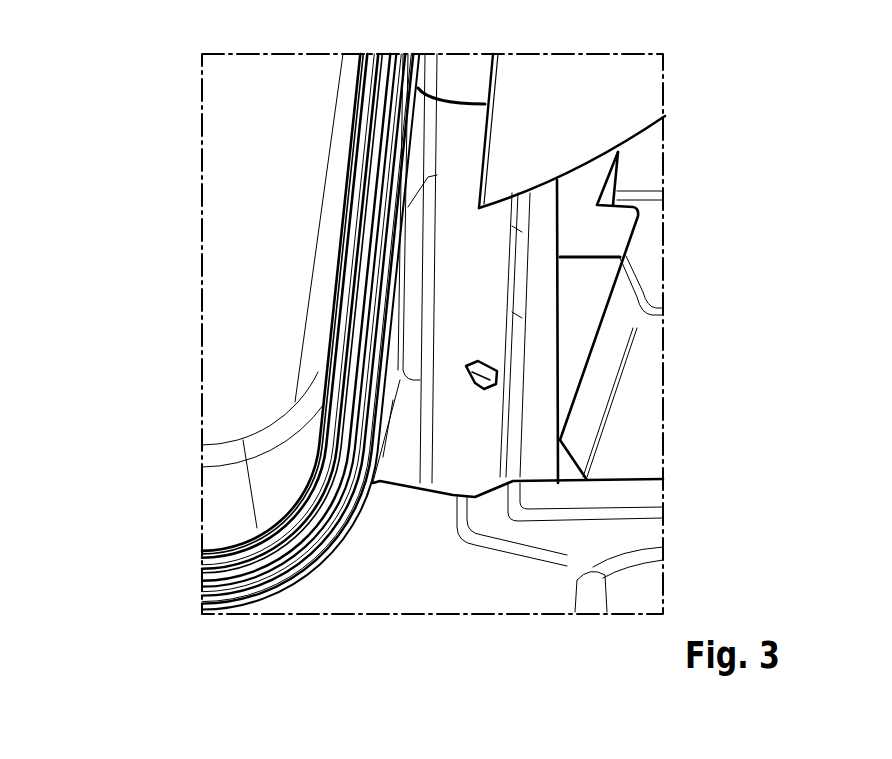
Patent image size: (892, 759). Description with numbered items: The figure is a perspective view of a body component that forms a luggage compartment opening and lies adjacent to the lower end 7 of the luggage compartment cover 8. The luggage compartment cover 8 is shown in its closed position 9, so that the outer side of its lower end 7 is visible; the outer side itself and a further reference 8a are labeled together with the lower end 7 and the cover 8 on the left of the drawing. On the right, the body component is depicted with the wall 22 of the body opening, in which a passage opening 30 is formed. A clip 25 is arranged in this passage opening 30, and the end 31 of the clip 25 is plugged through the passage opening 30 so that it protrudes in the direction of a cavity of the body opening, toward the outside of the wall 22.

The lower end 7 is at (237, 332).
The luggage compartment cover 8 is at (237, 332).
The door frame flange 8a is at (237, 332).
The closed position 9 is at (237, 233).
The wall 22 is at (600, 268).
The passage opening 30 is at (473, 338).
The clip 25 is at (473, 518).
The end 31 is at (471, 389).